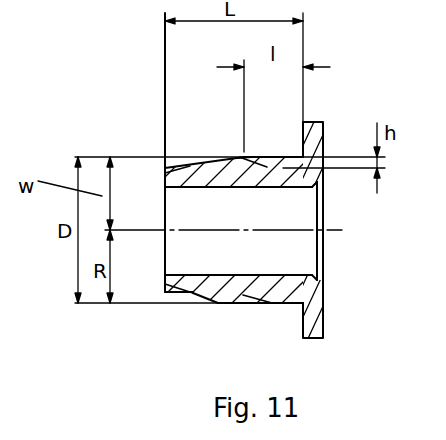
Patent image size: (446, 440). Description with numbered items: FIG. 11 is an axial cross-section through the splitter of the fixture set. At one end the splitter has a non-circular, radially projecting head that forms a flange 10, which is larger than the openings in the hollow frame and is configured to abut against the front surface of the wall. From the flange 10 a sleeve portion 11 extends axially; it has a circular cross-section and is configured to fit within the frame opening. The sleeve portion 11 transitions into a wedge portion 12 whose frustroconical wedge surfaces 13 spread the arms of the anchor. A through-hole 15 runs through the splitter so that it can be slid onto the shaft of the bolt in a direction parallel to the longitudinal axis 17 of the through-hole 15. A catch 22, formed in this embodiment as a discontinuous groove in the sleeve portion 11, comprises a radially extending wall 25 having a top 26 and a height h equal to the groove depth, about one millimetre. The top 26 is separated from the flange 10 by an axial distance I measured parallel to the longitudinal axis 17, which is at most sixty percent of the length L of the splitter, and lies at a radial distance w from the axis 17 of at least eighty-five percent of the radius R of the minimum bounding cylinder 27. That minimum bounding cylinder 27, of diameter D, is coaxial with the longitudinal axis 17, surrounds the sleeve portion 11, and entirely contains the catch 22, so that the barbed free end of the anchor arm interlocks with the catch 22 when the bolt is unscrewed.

The flange 10 is at (321, 133).
The sleeve portion 11 is at (275, 173).
The wedge portion 12 is at (213, 283).
The wedge surface 13 is at (218, 303).
The through-hole 15 is at (288, 253).
The longitudinal axis 17 is at (242, 251).
The catch 22 is at (257, 155).
The radially extending wall 25 is at (247, 305).
The top 26 is at (244, 153).
The minimum bounding cylinder 27 is at (135, 157).